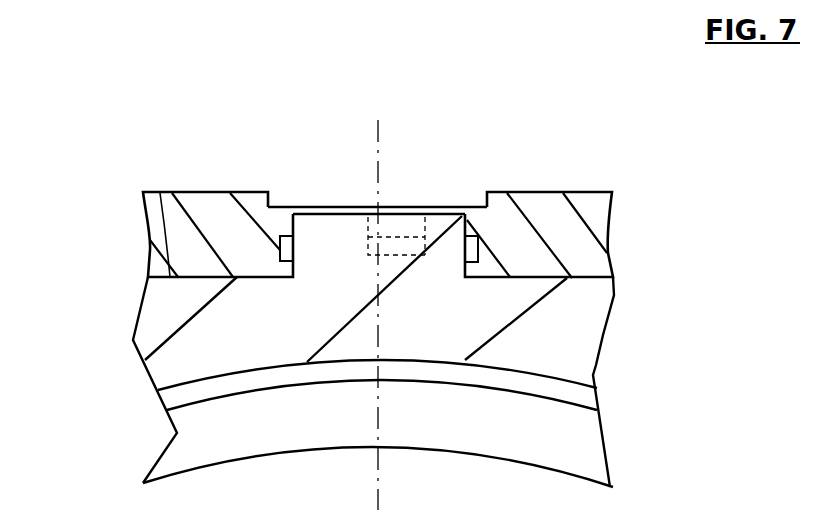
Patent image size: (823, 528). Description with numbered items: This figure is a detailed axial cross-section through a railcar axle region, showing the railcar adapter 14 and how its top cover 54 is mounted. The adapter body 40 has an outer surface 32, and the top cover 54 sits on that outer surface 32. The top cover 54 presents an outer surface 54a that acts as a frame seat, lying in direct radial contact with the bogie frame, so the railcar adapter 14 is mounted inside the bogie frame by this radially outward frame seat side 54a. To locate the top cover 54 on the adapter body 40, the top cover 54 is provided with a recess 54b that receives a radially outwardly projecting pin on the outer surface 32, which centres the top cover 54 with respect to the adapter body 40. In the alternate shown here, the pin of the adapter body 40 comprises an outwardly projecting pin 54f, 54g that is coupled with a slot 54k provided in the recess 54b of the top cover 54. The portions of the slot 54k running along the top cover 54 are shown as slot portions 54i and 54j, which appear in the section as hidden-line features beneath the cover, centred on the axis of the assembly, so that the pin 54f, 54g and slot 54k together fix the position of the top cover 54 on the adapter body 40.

The railcar adapter 14 is at (119, 205).
The outer surface 32 is at (540, 278).
The adapter body 40 is at (159, 192).
The top cover 54 is at (218, 192).
The outer surface 54a is at (594, 192).
The recess 54b is at (447, 207).
The outwardly projecting pin 54f is at (463, 270).
The outwardly projecting pin 54g is at (300, 283).
The slot portion 54i is at (368, 229).
The slot portion 54j is at (424, 230).
The slot 54k is at (478, 262).